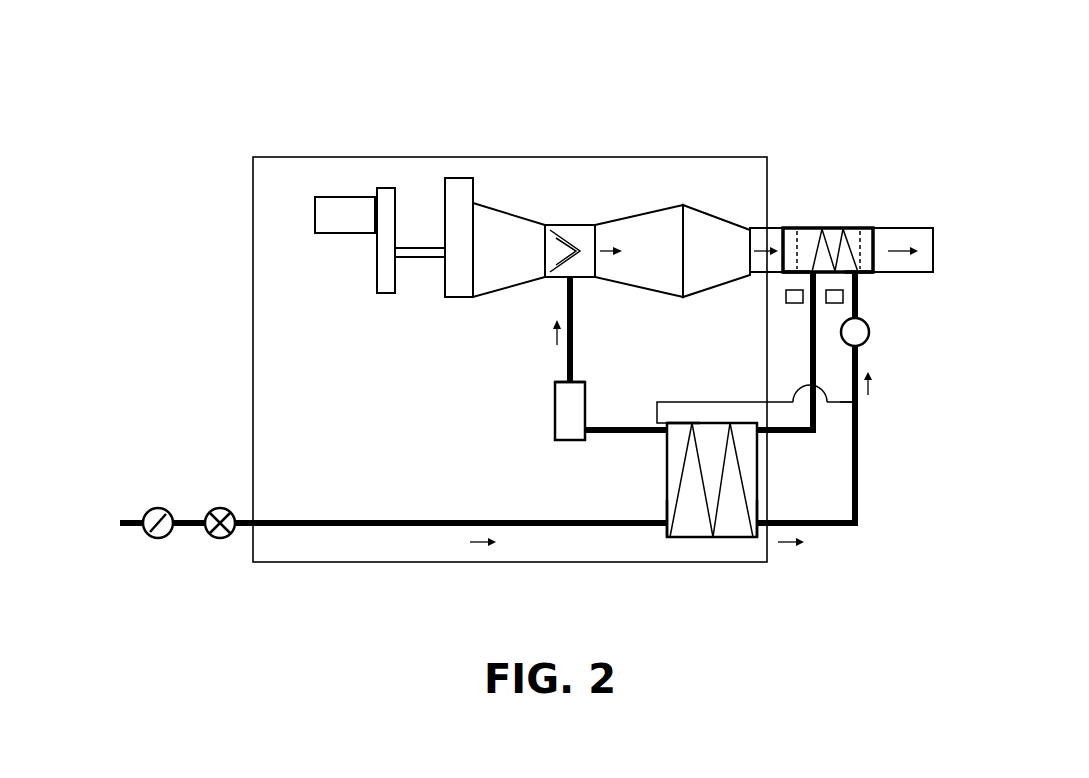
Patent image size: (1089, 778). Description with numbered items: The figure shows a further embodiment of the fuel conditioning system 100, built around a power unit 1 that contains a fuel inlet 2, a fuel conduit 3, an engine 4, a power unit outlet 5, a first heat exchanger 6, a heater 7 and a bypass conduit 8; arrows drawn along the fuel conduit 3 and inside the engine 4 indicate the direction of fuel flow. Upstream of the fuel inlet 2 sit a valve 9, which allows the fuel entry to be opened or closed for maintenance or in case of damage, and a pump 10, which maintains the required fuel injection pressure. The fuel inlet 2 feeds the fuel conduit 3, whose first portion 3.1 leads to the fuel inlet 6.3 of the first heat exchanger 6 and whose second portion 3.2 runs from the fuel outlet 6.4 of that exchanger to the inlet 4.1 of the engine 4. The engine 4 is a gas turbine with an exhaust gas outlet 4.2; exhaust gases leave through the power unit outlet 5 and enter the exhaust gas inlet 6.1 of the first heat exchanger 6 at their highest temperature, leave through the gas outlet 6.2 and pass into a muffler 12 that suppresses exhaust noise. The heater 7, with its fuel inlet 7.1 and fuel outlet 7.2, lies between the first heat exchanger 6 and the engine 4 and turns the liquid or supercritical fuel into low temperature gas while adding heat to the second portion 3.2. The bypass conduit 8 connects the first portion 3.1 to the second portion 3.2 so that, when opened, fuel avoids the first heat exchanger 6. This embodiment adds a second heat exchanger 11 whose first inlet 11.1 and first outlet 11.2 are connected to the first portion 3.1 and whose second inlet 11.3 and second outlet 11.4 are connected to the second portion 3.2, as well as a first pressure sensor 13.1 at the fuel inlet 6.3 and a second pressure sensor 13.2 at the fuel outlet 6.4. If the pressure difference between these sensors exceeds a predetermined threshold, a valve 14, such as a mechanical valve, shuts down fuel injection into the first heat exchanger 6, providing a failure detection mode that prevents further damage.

The conditioning system 100 is at (292, 106).
The power unit 1 is at (430, 157).
The fuel inlet 2 is at (250, 530).
The fuel conduit 3 is at (900, 534).
The first portion of the fuel conduit 3.1 is at (572, 530).
The second portion of the fuel conduit 3.2 is at (565, 358).
The engine 4 is at (585, 232).
The inlet of the engine 4.1 is at (563, 282).
The exhaust gas outlet 4.2 is at (745, 228).
The power unit outlet 5 is at (775, 228).
The first heat exchanger 6 is at (860, 228).
The exhaust gas inlet 6.1 is at (786, 228).
The gas outlet 6.2 is at (880, 228).
The fuel inlet of the first heat exchanger 6.3 is at (868, 276).
The fuel outlet of the first heat exchanger 6.4 is at (785, 278).
The heater 7 is at (570, 415).
The fuel inlet of the heater 7.1 is at (587, 440).
The fuel outlet of the heater 7.2 is at (557, 392).
The bypass conduit 8 is at (860, 415).
The valve 9 is at (145, 512).
The pump 10 is at (210, 510).
The second heat exchanger 11 is at (690, 473).
The first inlet of the second heat exchanger 11.1 is at (665, 535).
The first outlet of the second heat exchanger 11.2 is at (760, 535).
The second inlet of the second heat exchanger 11.3 is at (764, 442).
The second outlet of the second heat exchanger 11.4 is at (657, 400).
The muffler 12 is at (915, 228).
The first pressure sensor 13.1 is at (848, 302).
The second pressure sensor 13.2 is at (787, 305).
The valve 14 is at (868, 337).